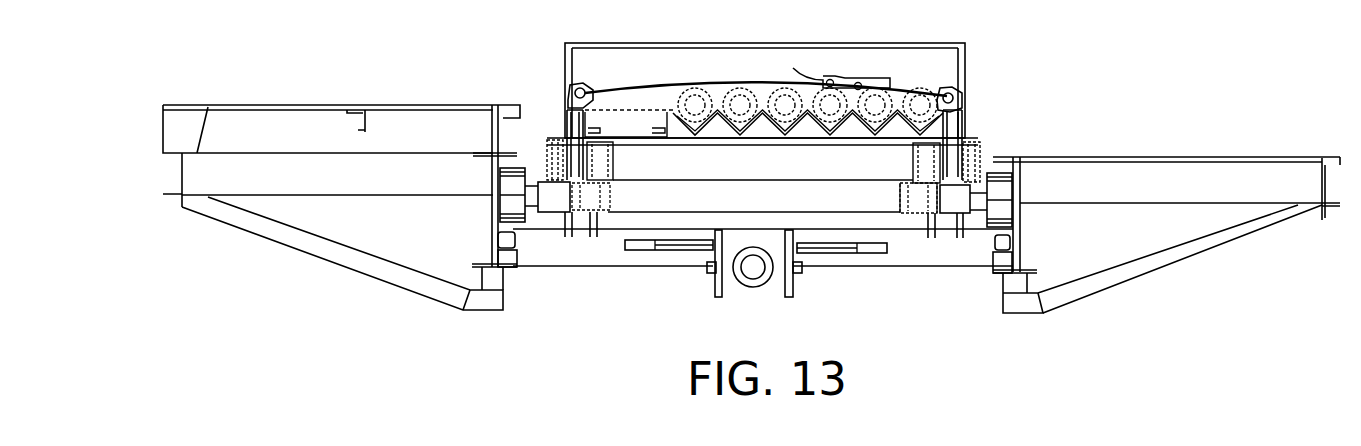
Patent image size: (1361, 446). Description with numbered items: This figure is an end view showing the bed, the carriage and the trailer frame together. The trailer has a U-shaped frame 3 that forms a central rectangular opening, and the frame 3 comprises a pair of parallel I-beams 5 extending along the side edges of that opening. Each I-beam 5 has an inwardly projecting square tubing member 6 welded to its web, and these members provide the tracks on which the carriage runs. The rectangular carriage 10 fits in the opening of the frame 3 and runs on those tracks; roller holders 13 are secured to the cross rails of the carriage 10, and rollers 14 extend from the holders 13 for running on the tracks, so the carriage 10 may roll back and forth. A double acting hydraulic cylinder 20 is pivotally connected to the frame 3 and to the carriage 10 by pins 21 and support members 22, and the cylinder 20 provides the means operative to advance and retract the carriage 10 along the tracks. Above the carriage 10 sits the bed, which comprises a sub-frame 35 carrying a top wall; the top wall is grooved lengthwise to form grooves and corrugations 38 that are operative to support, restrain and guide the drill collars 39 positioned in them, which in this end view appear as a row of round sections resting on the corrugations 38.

The frame 3 is at (1028, 225).
The I-beam 5 is at (487, 205).
The square tubing member 6 is at (498, 238).
The carriage 10 is at (883, 205).
The roller holder 13 is at (927, 203).
The roller 14 is at (512, 188).
The double acting hydraulic cylinder 20 is at (747, 293).
The pin 21 is at (802, 267).
The support member 22 is at (713, 280).
The bed sub-frame 35 is at (965, 130).
The corrugation 38 is at (710, 125).
The drill collar 39 is at (677, 100).